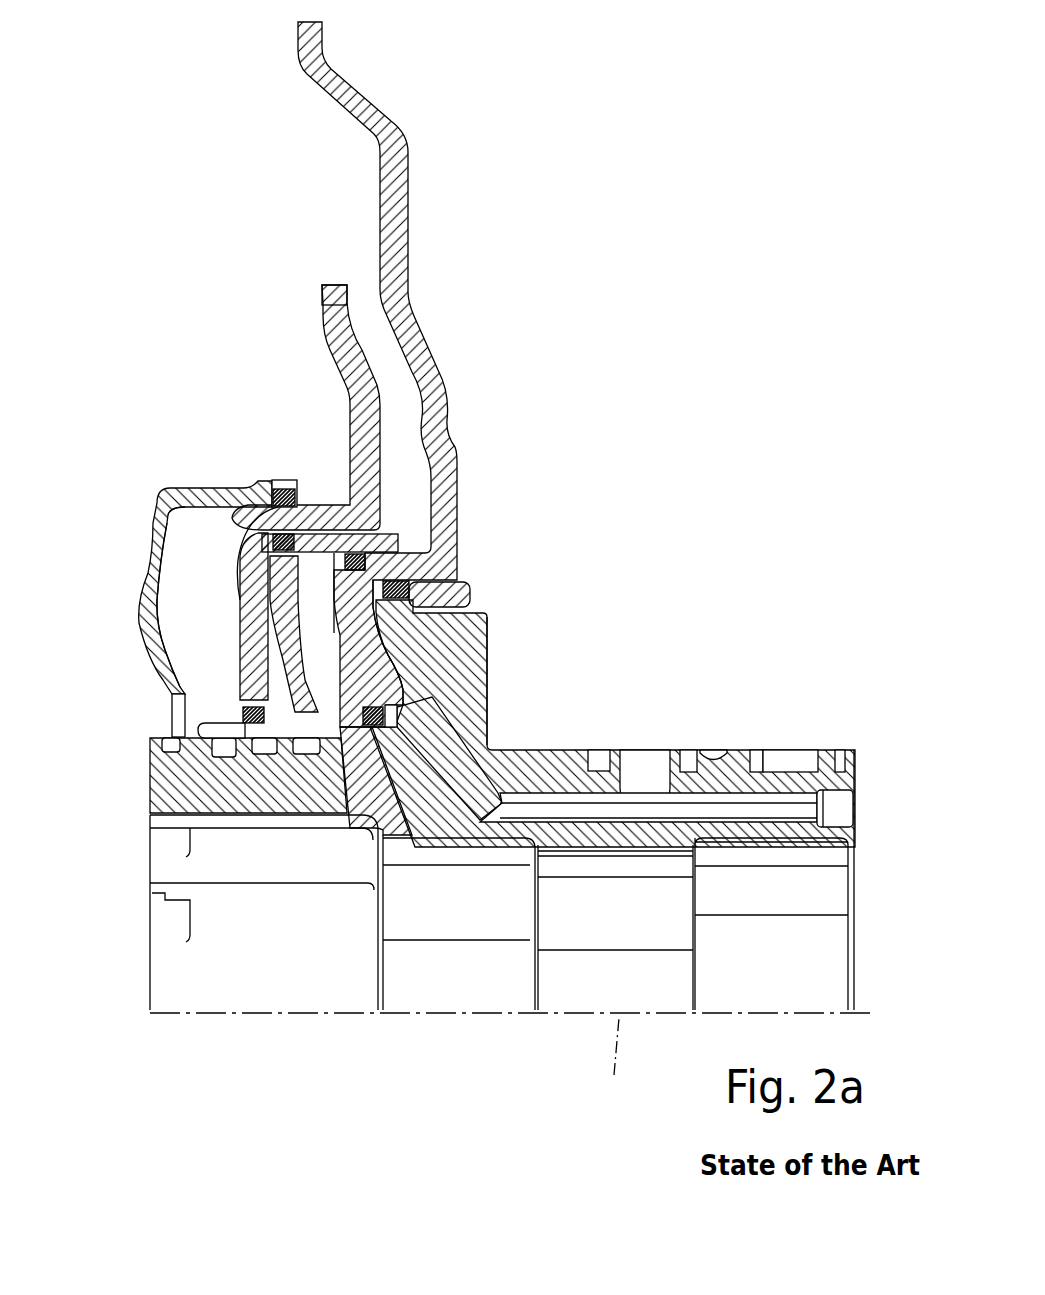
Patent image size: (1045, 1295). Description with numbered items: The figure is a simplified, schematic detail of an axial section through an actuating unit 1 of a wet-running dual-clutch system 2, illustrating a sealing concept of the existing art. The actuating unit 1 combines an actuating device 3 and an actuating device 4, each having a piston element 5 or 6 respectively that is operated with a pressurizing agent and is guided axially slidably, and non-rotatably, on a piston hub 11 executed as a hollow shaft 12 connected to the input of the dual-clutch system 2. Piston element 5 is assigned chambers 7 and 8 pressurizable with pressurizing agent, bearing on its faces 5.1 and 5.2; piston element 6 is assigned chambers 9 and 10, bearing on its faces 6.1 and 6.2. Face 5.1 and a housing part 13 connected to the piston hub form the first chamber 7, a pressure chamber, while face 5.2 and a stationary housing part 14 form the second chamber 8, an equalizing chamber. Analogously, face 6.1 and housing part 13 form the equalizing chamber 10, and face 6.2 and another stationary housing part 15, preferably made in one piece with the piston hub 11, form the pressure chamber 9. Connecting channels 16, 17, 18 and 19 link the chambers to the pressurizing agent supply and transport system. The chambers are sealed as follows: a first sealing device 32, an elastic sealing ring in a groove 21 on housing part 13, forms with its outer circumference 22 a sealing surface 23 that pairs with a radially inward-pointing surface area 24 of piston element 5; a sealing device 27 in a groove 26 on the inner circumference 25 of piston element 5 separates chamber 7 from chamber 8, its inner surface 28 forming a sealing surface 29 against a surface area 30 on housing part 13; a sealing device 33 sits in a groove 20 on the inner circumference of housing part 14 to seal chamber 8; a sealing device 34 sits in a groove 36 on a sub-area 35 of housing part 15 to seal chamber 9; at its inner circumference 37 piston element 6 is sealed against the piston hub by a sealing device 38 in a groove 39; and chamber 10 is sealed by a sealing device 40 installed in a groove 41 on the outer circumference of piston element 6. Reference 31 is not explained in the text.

The actuating unit 1 is at (455, 564).
The wet-running dual-clutch system 2 is at (333, 469).
The actuating device 3 is at (325, 303).
The actuating device 4 is at (409, 280).
The piston element 5 is at (297, 360).
The face 5.1 is at (297, 258).
The face 5.2 is at (342, 378).
The piston element 6 is at (440, 469).
The face 6.1 is at (383, 650).
The face 6.2 is at (338, 700).
The chamber 7 is at (283, 680).
The chamber 8 is at (214, 642).
The chamber 9 is at (407, 680).
The chamber 10 is at (304, 632).
The piston hub 11 is at (447, 803).
The hollow shaft 12 is at (447, 803).
The housing part 13 is at (318, 712).
The stationary housing part 14 is at (166, 609).
The stationary housing part 15 is at (612, 722).
The connecting channel 16 is at (268, 750).
The connecting channel 17 is at (175, 752).
The connecting channel 18 is at (480, 805).
The connecting channel 19 is at (313, 752).
The groove 20 is at (279, 453).
The groove 21 is at (192, 574).
The outer circumference 22 is at (240, 457).
The sealing surface 23 is at (240, 457).
The surface area 24 is at (392, 496).
The inner circumference 25 is at (175, 788).
The groove 26 is at (268, 834).
The sealing device 27 is at (222, 745).
The inner surface 28 is at (142, 788).
The sealing surface 29 is at (142, 788).
The surface area 30 is at (243, 722).
The boot edge 31 is at (203, 522).
The first sealing device 32 is at (273, 548).
The sealing device 33 is at (285, 488).
The sealing device 34 is at (412, 598).
The sub-area 35 is at (480, 596).
The groove 36 is at (504, 582).
The inner circumference 37 is at (388, 808).
The sealing device 38 is at (392, 697).
The groove 39 is at (375, 712).
The sealing device 40 is at (366, 545).
The groove 41 is at (370, 558).